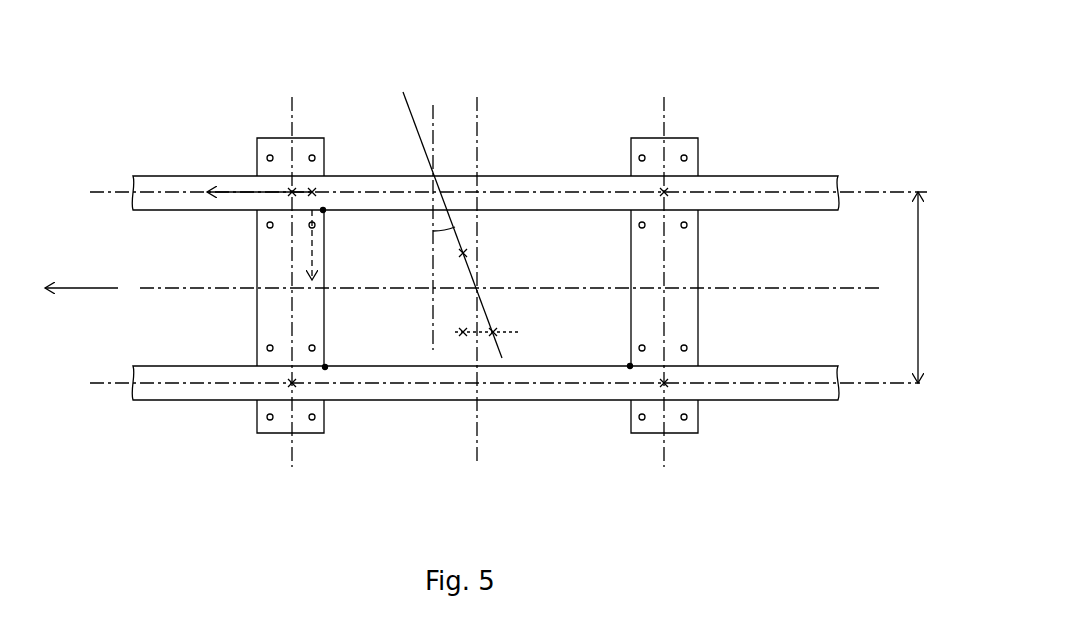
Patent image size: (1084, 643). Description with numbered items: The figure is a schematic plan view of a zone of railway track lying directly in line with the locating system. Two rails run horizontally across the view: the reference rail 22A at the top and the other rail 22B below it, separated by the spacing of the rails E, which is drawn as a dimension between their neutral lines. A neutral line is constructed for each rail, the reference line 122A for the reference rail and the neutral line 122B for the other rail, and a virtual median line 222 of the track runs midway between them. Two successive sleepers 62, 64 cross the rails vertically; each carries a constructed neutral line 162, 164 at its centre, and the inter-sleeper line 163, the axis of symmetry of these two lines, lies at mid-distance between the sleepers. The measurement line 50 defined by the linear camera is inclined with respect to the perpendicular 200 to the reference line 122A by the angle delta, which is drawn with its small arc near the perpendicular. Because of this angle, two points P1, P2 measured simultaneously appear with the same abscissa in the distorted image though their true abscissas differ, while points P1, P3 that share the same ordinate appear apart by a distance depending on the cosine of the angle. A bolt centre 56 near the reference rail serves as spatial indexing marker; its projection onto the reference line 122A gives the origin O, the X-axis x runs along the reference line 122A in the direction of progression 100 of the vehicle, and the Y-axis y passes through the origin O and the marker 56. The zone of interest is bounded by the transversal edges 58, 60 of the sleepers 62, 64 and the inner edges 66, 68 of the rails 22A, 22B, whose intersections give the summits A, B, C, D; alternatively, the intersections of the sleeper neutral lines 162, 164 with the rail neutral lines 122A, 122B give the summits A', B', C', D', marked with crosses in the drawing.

The reference rail 22A is at (798, 183).
The other rail 22B is at (832, 392).
The measurement line 50 is at (407, 100).
The bolt centre 56 is at (312, 225).
The transversal edge of sleeper 58 is at (630, 328).
The transversal edge of sleeper 60 is at (325, 340).
The sleeper 62 is at (683, 237).
The sleeper 64 is at (277, 240).
The inner edge of rail 66 is at (740, 213).
The inner edge of rail 68 is at (778, 358).
The direction of progression 100 is at (95, 288).
The reference line 122A is at (90, 192).
The neutral line of rail 122B is at (90, 383).
The neutral line of sleeper 162 is at (667, 455).
The inter-sleeper line 163 is at (477, 465).
The neutral line of sleeper 164 is at (292, 455).
The perpendicular to the reference line 200 is at (433, 115).
The median line 222 is at (883, 290).
The spacing of the rails E is at (918, 240).
The point of the railway track P1 is at (463, 253).
The point of the railway track P2 is at (493, 332).
The point of the railway track P3 is at (463, 332).
The X-axis x is at (248, 192).
The Y-axis y is at (312, 253).
The origin O is at (312, 192).
The intersection summit A is at (618, 423).
The intersection summit A' is at (709, 420).
The intersection summit B is at (610, 151).
The intersection summit B' is at (702, 121).
The intersection summit C is at (353, 165).
The intersection summit C' is at (258, 120).
The intersection summit D is at (347, 415).
The intersection summit D' is at (251, 421).